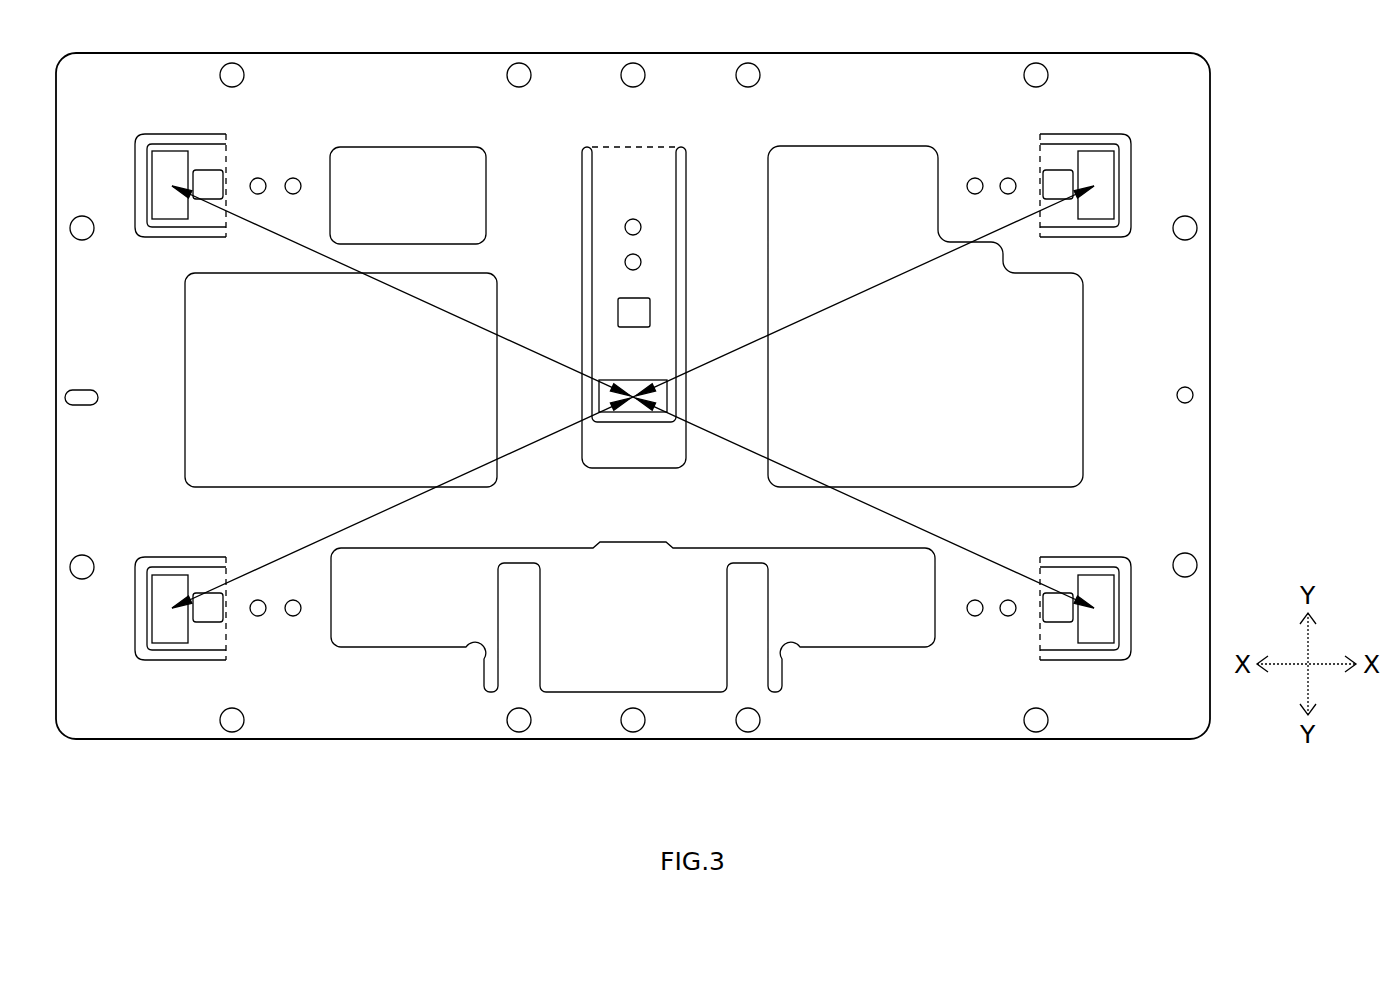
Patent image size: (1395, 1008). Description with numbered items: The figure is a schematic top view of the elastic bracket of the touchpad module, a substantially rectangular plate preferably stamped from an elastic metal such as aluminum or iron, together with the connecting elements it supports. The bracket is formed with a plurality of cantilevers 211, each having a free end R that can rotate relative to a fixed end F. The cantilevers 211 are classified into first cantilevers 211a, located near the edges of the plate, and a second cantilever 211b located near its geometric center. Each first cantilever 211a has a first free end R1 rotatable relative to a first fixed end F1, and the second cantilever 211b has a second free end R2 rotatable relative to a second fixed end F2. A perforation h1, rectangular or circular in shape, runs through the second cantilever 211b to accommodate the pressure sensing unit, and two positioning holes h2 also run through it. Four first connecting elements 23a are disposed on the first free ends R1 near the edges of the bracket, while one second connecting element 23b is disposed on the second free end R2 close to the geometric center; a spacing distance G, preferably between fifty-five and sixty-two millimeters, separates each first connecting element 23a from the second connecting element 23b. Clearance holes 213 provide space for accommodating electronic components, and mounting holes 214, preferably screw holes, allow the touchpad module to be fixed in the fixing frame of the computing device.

The first cantilever 211a is at (637, 392).
The second cantilever 211b is at (647, 297).
The cantilever 211 is at (1301, 326).
The clearance hole 213 is at (410, 160).
The mounting hole 214 is at (92, 396).
The first connecting element 23a is at (167, 203).
The second connecting element 23b is at (608, 397).
The first free end R1 is at (147, 188).
The second free end R2 is at (633, 424).
The free end R is at (1299, 129).
The first fixed end F1 is at (633, 390).
The second fixed end F2 is at (635, 146).
The fixed end F is at (1299, 228).
The perforation h1 is at (636, 313).
The positioning hole h2 is at (629, 219).
The spacing distance G is at (634, 419).